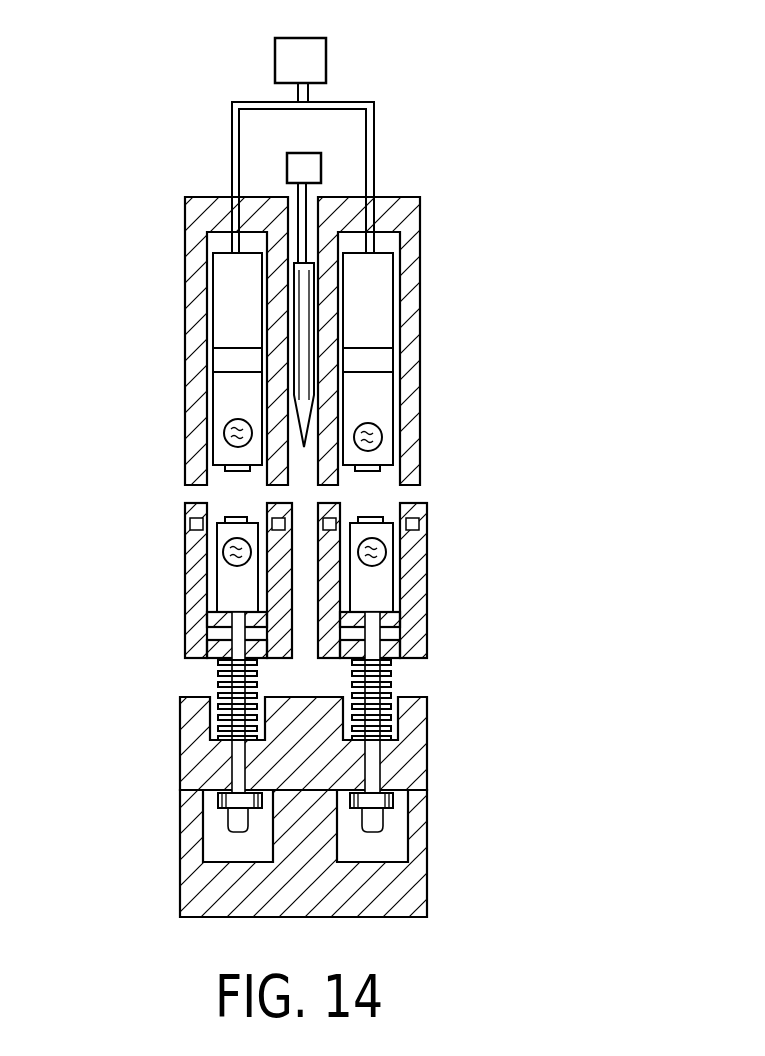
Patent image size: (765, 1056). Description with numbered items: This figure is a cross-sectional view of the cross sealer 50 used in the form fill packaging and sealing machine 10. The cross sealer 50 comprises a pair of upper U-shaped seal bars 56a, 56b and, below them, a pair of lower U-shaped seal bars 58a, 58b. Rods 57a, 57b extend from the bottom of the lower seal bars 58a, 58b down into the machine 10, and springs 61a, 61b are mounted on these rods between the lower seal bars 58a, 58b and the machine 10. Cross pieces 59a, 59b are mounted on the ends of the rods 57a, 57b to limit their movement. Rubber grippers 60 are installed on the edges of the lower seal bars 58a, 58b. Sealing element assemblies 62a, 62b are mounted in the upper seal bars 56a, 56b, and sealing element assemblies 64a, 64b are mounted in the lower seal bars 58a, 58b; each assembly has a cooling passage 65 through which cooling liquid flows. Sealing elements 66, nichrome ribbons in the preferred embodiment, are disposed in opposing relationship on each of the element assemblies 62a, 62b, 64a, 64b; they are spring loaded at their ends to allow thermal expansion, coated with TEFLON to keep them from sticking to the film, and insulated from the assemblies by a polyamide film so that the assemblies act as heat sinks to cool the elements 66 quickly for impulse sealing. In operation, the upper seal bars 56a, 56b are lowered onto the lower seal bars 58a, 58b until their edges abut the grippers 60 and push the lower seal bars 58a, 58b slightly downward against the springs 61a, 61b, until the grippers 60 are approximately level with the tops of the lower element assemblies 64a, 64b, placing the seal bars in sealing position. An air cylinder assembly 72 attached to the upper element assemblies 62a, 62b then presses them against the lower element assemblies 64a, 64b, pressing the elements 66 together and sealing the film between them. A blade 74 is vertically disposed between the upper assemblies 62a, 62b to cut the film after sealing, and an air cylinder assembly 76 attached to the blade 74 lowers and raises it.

The machine 10 is at (308, 742).
The cross sealer 50 is at (574, 261).
The upper U-shaped seal bar 56a is at (185, 198).
The upper U-shaped seal bar 56b is at (420, 197).
The rod 57a is at (228, 767).
The rod 57b is at (437, 722).
The lower U-shaped seal bar 58a is at (183, 600).
The lower U-shaped seal bar 58b is at (420, 637).
The cross piece 59a is at (218, 806).
The cross piece 59b is at (431, 821).
The rubber gripper 60 is at (456, 518).
The spring 61a is at (182, 700).
The spring 61b is at (398, 680).
The sealing element assembly 62a is at (233, 388).
The sealing element assembly 62b is at (377, 393).
The sealing element assembly 64a is at (235, 590).
The sealing element assembly 64b is at (373, 592).
The cooling passage 65 is at (224, 430).
The sealing element 66 is at (233, 470).
The air cylinder assembly 72 is at (326, 58).
The blade 74 is at (393, 355).
The air cylinder assembly 76 is at (303, 153).